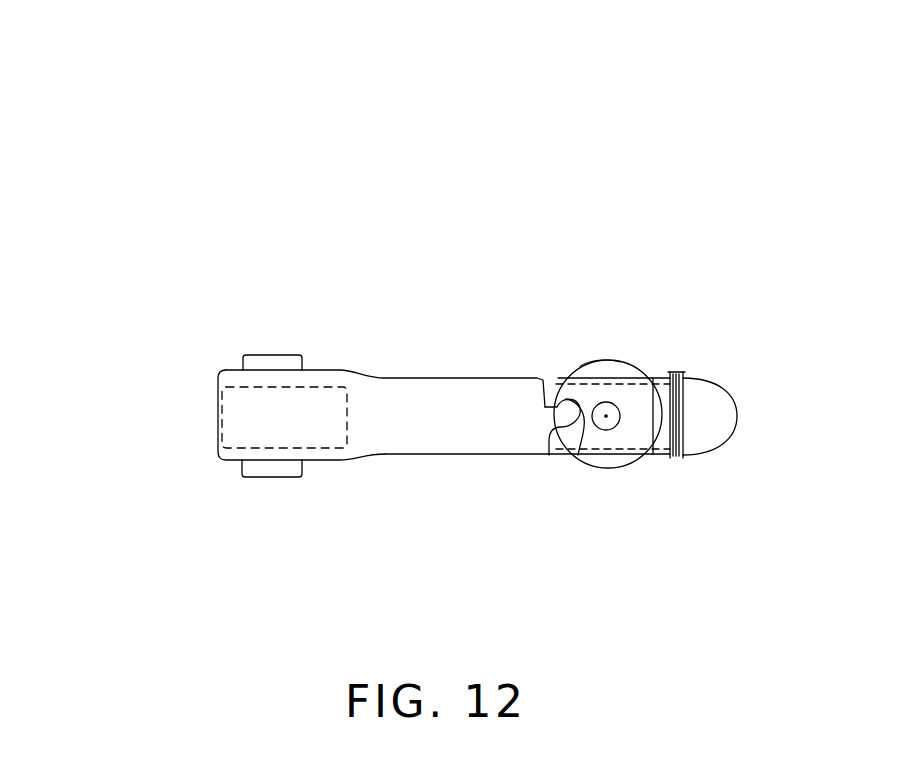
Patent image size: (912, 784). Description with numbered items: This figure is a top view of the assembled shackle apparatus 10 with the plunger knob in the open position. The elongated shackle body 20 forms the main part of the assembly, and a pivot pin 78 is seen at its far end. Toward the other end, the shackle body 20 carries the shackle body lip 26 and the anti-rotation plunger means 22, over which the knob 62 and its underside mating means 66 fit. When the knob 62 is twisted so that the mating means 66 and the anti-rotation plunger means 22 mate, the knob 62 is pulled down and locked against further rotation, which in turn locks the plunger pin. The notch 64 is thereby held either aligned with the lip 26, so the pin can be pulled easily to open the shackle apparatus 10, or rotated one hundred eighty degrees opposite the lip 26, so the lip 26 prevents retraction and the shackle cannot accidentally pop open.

The shackle apparatus 10 is at (94, 149).
The shackle body 20 is at (440, 415).
The anti-rotation plunger means 22 is at (630, 377).
The shackle body lip 26 is at (550, 424).
The knob 62 is at (620, 368).
The notch 64 is at (584, 454).
The mating means 66 is at (628, 450).
The pivot pin 78 is at (268, 480).